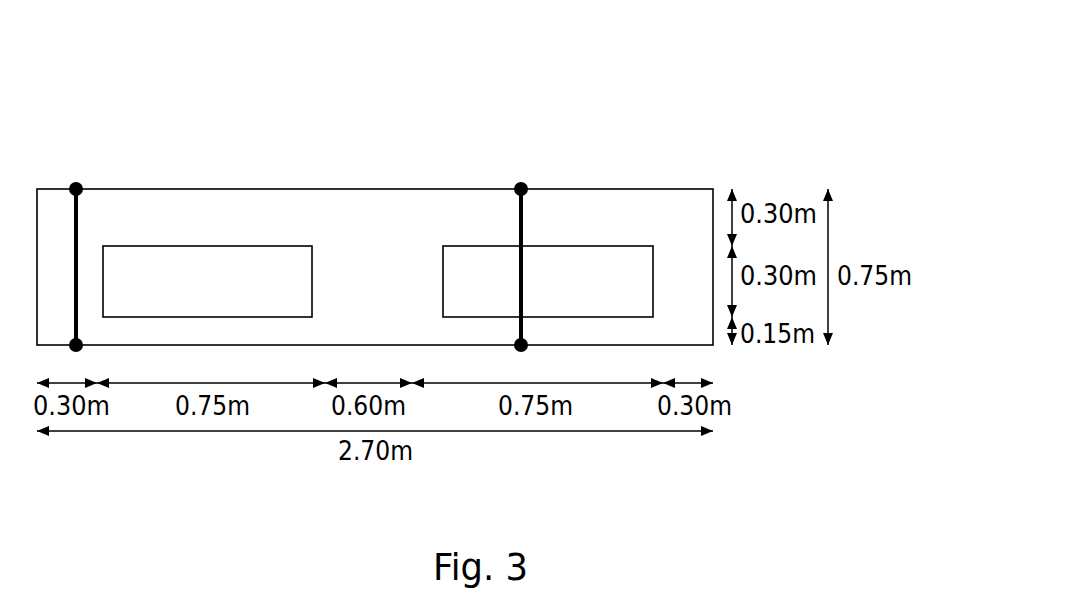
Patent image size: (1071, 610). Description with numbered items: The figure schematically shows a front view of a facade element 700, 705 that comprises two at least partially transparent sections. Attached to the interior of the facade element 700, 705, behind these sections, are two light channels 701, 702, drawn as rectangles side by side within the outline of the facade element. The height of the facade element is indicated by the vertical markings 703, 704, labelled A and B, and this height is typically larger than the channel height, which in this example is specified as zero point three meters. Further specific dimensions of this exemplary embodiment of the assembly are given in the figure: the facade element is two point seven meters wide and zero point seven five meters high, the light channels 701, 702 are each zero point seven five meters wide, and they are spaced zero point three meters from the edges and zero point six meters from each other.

The facade element 700 is at (700, 104).
The light channel 701 is at (172, 266).
The light channel 702 is at (588, 267).
The height of the facade element 703 is at (76, 245).
The height of the facade element 704 is at (521, 325).
The facade element 705 is at (468, 200).